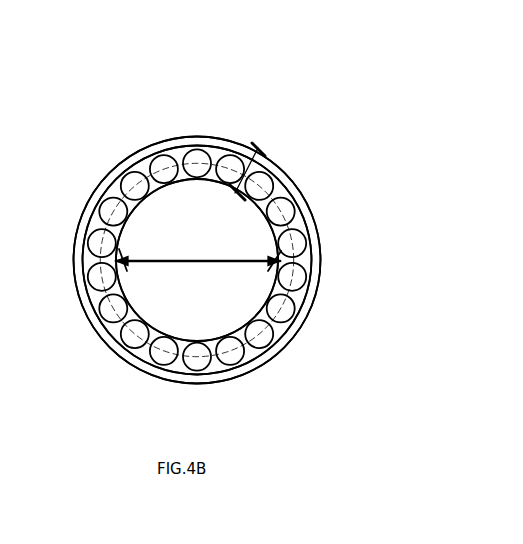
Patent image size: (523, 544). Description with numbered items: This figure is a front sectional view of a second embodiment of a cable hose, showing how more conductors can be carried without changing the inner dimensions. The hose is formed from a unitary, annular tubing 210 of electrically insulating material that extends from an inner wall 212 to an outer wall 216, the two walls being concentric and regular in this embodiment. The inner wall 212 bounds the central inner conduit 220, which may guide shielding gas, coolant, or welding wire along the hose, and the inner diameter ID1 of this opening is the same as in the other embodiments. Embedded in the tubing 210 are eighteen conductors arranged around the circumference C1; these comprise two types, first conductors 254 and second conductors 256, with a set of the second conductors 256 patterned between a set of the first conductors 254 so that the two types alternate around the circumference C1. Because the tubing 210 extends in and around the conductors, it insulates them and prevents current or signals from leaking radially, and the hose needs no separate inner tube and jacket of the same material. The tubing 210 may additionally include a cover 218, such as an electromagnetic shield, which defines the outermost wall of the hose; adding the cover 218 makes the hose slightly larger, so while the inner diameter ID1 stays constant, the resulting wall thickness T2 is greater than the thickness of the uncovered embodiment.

The tubing 210 is at (140, 356).
The inner wall 212 is at (279, 262).
The outer wall 216 is at (76, 261).
The cover 218 is at (138, 151).
The inner conduit 220 is at (198, 212).
The first conductors 254 is at (306, 232).
The second conductors 256 is at (303, 288).
The circumference C1 is at (116, 211).
The thickness T2 is at (257, 182).
The inner diameter ID1 is at (246, 293).